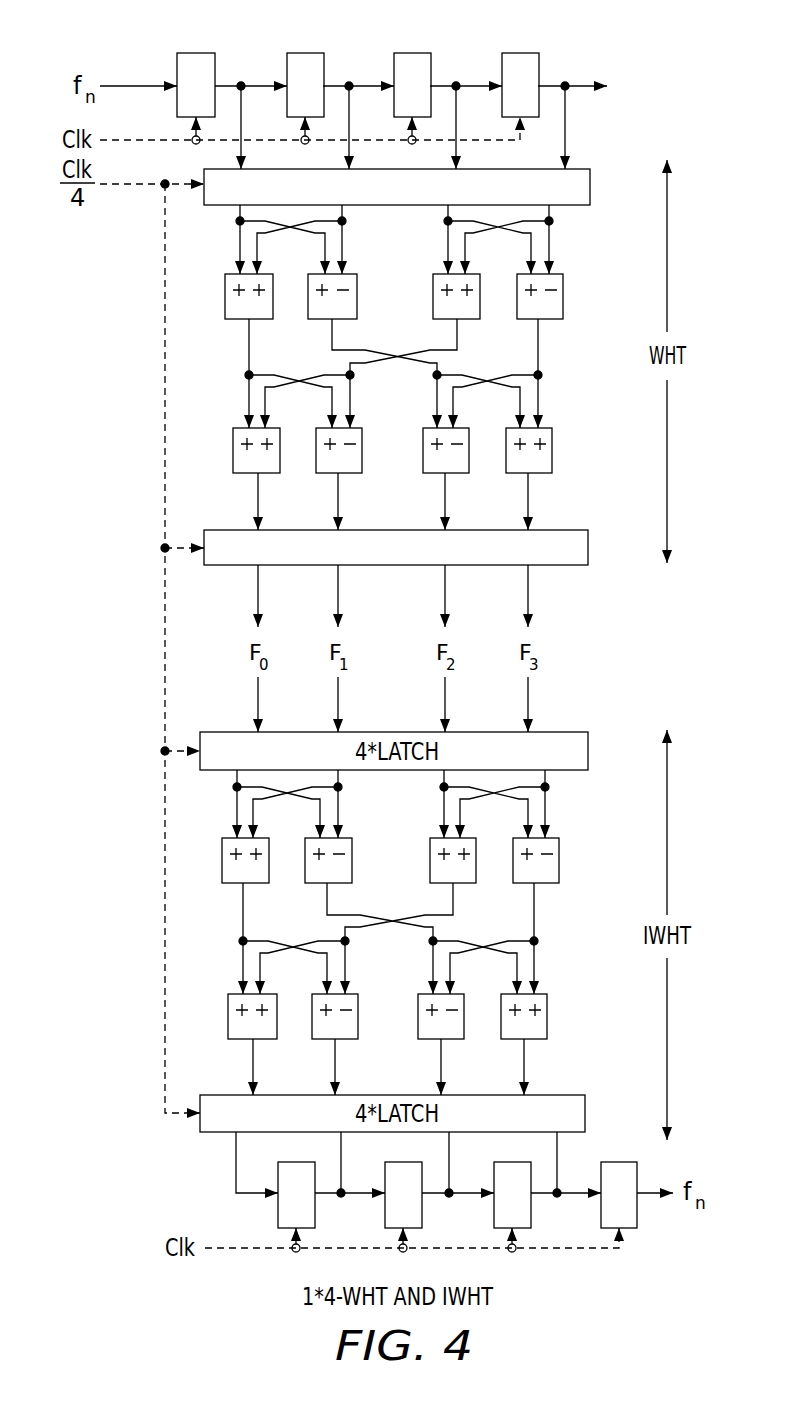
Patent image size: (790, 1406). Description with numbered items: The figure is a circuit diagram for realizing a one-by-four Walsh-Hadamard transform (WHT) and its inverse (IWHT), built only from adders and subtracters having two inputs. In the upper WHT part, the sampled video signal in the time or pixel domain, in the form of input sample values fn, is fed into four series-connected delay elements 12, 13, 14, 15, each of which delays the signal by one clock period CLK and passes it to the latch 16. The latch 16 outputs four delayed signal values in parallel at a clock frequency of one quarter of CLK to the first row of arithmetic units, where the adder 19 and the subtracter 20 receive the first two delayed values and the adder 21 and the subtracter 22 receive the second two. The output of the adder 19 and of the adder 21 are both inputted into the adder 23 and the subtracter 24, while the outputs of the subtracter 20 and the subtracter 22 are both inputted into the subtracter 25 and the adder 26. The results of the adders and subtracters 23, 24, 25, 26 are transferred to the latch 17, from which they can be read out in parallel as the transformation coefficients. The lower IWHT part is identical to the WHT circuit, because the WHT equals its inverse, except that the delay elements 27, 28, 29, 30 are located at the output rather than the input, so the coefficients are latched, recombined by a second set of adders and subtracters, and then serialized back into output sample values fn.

The delay element 12 is at (198, 52).
The delay element 13 is at (307, 52).
The delay element 14 is at (413, 52).
The delay element 15 is at (520, 52).
The latch 16 is at (590, 178).
The latch 17 is at (588, 540).
The adder 19 is at (260, 313).
The subtracter 20 is at (345, 313).
The adder 21 is at (470, 313).
The subtracter 22 is at (556, 313).
The adder 23 is at (268, 468).
The subtracter 24 is at (352, 468).
The subtracter 25 is at (458, 468).
The adder 26 is at (543, 468).
The delay element 27 is at (310, 1217).
The delay element 28 is at (418, 1217).
The delay element 29 is at (520, 1217).
The delay element 30 is at (630, 1222).